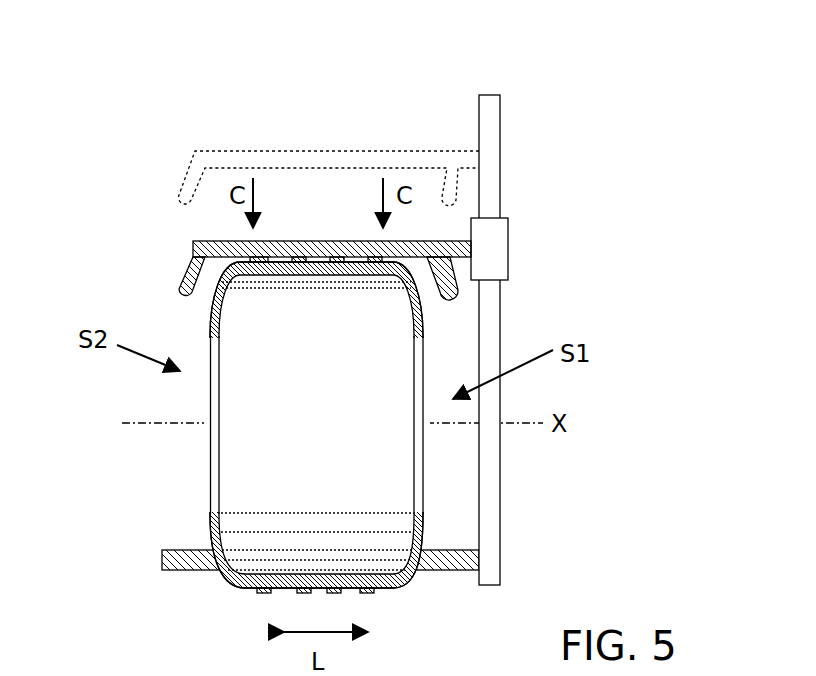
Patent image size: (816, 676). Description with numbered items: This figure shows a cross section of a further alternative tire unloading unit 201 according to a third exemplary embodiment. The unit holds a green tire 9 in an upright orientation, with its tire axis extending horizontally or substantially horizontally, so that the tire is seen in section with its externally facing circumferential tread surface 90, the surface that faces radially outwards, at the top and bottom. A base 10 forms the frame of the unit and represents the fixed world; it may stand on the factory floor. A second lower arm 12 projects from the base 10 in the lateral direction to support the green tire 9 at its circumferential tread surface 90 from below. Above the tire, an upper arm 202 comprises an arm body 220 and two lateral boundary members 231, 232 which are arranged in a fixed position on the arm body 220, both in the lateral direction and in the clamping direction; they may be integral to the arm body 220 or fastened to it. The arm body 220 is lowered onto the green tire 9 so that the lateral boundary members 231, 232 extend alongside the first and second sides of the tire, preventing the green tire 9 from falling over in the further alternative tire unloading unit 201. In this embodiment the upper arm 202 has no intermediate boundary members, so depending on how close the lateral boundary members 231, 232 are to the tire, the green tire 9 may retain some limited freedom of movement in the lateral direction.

The further alternative tire unloading unit 201 is at (318, 186).
The upper arm 202 is at (292, 106).
The base 10 is at (488, 168).
The arm body 220 is at (312, 238).
The lateral boundary member 232 is at (185, 263).
The lateral boundary member 231 is at (455, 292).
The green tire 9 is at (228, 468).
The circumferential tread surface 90 is at (248, 590).
The second lower arm 12 is at (433, 570).